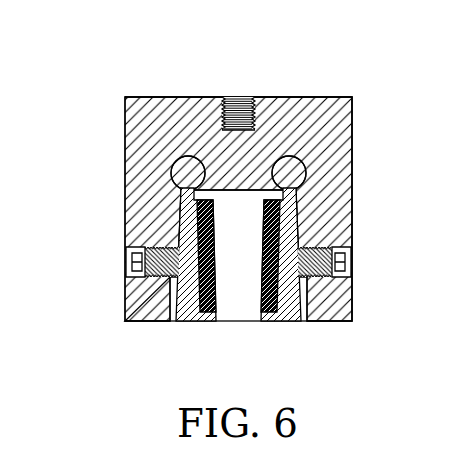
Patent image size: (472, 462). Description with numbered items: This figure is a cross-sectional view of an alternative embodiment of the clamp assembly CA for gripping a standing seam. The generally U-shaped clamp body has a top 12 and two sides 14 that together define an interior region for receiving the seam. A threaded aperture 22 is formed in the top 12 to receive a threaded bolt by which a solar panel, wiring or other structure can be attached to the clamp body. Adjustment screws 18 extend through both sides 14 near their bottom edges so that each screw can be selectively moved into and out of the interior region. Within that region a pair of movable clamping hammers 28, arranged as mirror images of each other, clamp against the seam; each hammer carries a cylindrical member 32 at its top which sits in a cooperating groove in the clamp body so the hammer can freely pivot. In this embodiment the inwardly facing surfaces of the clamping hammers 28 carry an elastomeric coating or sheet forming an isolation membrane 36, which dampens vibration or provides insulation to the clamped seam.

The top 12 is at (170, 97).
The sides 14 is at (125, 138).
The threaded aperture 22 is at (243, 97).
The clamp assembly CA is at (349, 86).
The cylindrical member 32 is at (300, 170).
The isolation membrane 36 is at (182, 212).
The clamping hammers 28 is at (195, 290).
The adjustment screws 18 is at (143, 277).